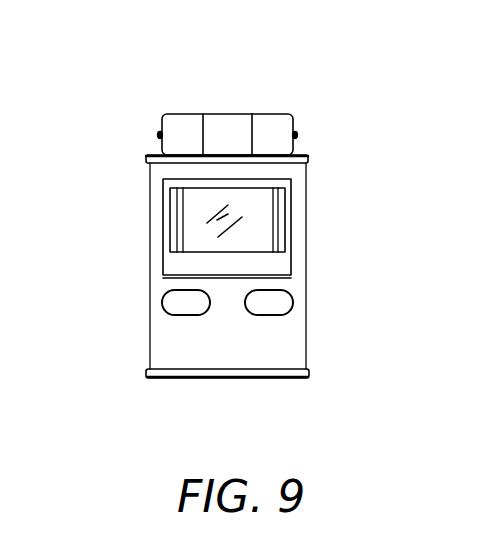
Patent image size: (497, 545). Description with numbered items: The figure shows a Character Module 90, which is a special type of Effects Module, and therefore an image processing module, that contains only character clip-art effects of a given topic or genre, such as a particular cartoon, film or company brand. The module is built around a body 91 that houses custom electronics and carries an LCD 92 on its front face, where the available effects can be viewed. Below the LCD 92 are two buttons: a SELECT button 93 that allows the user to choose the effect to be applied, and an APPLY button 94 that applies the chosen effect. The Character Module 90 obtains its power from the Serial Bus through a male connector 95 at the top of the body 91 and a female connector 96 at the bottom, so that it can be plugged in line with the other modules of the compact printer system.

The Character Module 90 is at (338, 90).
The body 91 is at (307, 352).
The LCD 92 is at (195, 235).
The SELECT button 93 is at (178, 302).
The APPLY button 94 is at (272, 303).
The male connector 95 is at (187, 114).
The female connector 96 is at (187, 378).